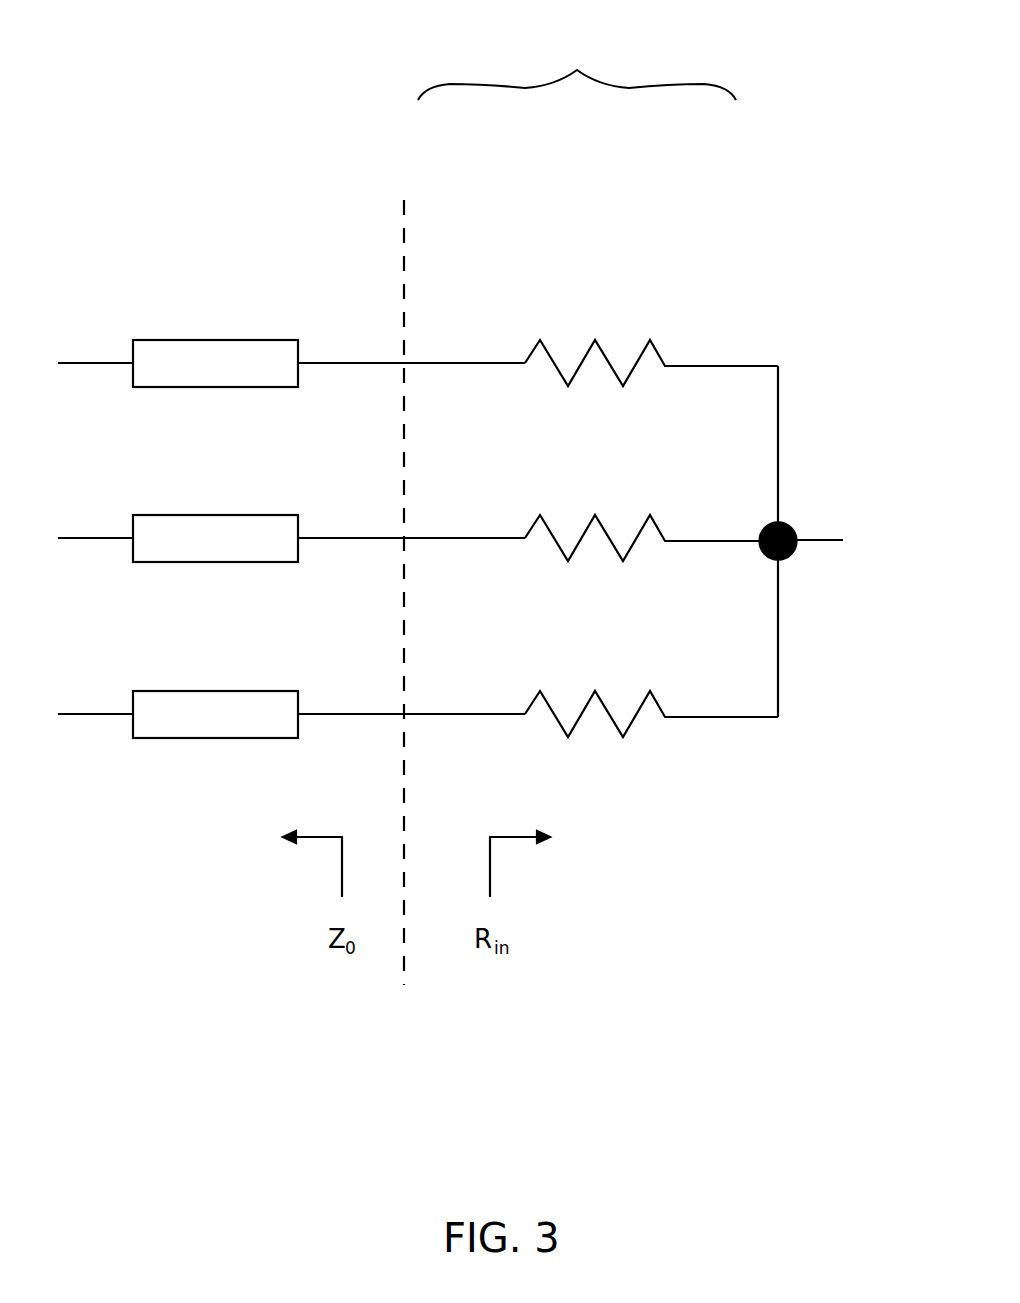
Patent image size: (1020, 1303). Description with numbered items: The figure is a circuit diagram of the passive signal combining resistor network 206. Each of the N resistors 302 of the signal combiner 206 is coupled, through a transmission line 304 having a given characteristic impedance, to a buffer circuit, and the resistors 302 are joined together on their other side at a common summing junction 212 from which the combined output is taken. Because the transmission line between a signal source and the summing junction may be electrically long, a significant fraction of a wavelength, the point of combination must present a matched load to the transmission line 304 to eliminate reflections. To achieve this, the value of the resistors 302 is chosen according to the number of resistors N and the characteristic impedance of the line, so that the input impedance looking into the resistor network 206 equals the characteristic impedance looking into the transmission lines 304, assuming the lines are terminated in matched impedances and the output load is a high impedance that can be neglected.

The passive signal combining resistor network 206 is at (591, 36).
The transmission line 304 is at (193, 272).
The resistor 302 is at (622, 276).
The common node 212 is at (809, 566).